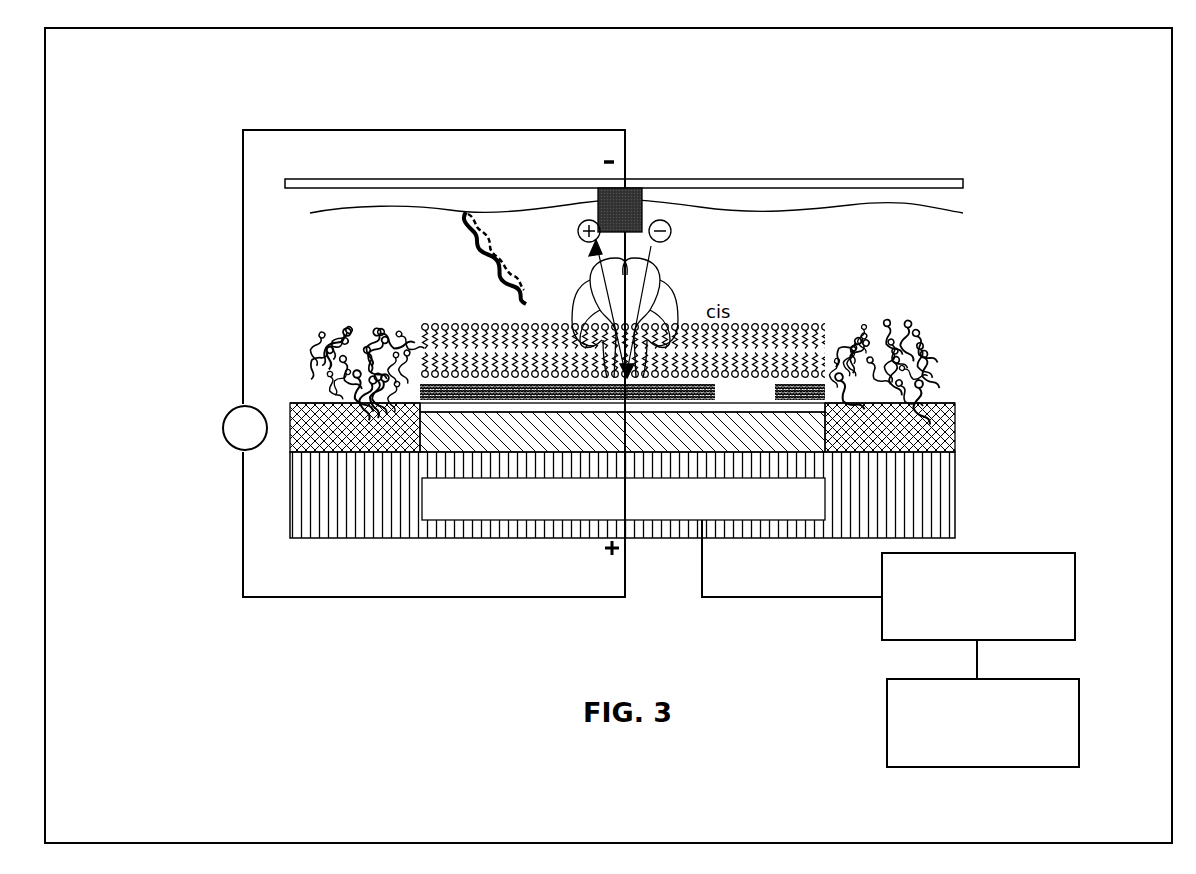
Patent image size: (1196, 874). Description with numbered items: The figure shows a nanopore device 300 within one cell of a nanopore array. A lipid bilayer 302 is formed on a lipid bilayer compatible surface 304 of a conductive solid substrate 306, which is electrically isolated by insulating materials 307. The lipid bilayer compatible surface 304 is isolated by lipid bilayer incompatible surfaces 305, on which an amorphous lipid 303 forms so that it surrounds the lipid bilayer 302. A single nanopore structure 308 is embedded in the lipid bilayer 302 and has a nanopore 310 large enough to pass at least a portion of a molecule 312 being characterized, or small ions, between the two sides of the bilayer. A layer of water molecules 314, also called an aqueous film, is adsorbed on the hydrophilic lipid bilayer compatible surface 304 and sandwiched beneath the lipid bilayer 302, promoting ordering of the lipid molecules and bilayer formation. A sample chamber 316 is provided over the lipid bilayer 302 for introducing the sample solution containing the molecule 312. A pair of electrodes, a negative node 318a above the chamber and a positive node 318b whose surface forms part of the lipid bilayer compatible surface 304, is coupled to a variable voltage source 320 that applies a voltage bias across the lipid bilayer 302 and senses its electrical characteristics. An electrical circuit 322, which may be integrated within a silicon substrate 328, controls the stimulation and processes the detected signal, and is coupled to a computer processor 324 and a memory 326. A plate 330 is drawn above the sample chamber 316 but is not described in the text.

The nanopore device 300 is at (997, 118).
The lipid bilayer 302 is at (420, 328).
The amorphous lipid 303 is at (352, 330).
The lipid bilayer compatible surface 304 is at (466, 405).
The lipid bilayer incompatible surfaces 305 is at (316, 403).
The conductive solid substrate 306 is at (555, 442).
The insulating materials 307 is at (373, 436).
The nanopore structure 308 is at (664, 264).
The nanopore 310 is at (640, 306).
The molecule 312 is at (466, 236).
The layer of water molecules 314 is at (764, 401).
The sample chamber 316 is at (836, 257).
The negative node 318a is at (642, 203).
The positive node 318b is at (672, 412).
The variable voltage source 320 is at (223, 436).
The electrical circuit 322 is at (652, 537).
The computer processor 324 is at (1058, 553).
The memory 326 is at (1080, 714).
The silicon substrate 328 is at (379, 501).
The cover plate 330 is at (843, 179).